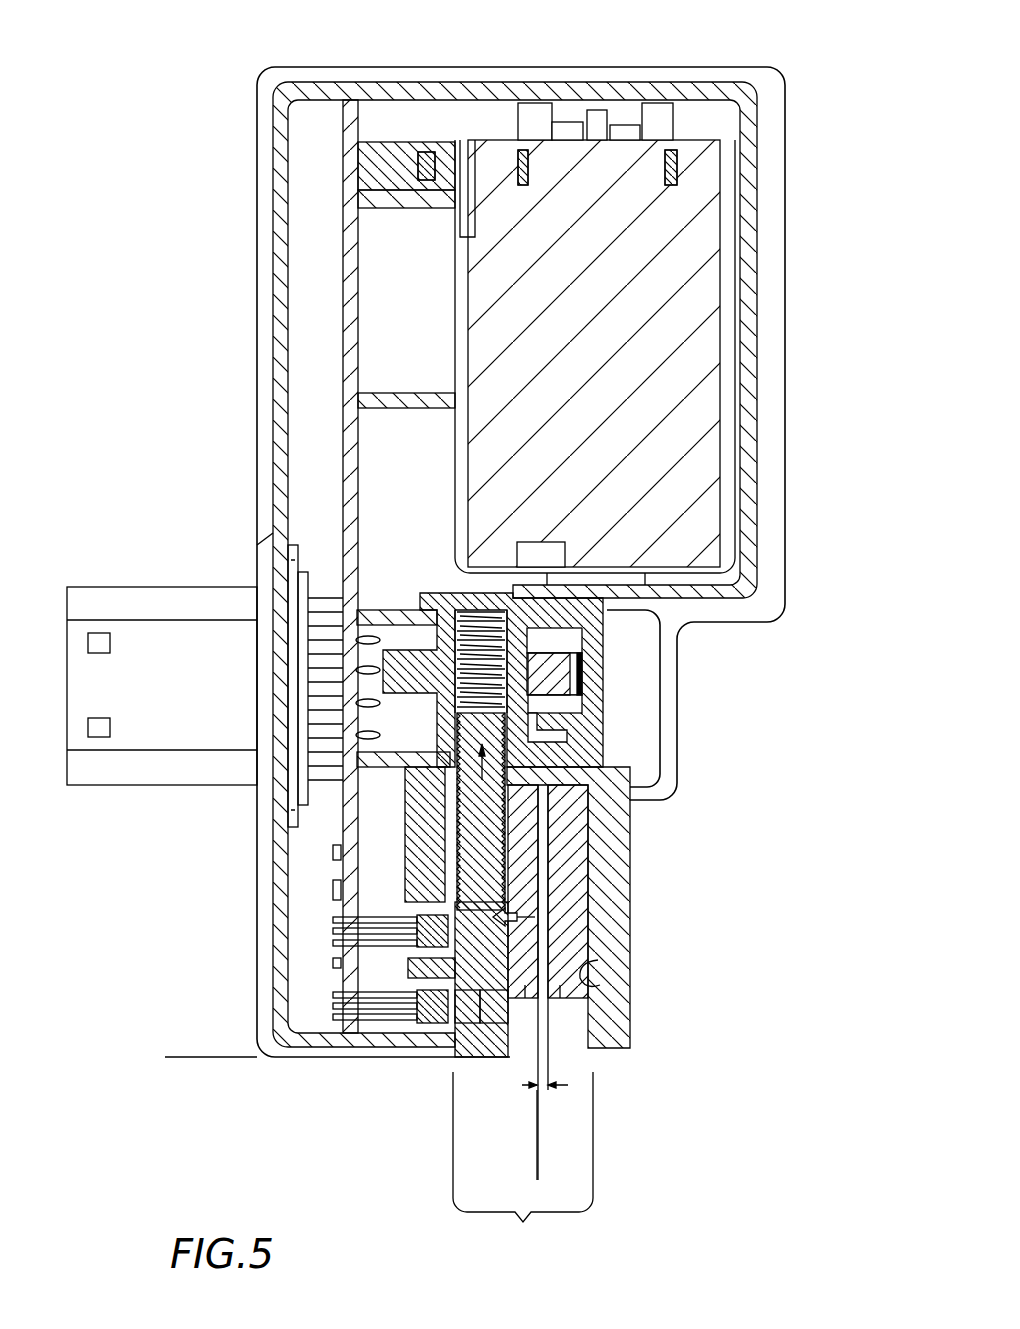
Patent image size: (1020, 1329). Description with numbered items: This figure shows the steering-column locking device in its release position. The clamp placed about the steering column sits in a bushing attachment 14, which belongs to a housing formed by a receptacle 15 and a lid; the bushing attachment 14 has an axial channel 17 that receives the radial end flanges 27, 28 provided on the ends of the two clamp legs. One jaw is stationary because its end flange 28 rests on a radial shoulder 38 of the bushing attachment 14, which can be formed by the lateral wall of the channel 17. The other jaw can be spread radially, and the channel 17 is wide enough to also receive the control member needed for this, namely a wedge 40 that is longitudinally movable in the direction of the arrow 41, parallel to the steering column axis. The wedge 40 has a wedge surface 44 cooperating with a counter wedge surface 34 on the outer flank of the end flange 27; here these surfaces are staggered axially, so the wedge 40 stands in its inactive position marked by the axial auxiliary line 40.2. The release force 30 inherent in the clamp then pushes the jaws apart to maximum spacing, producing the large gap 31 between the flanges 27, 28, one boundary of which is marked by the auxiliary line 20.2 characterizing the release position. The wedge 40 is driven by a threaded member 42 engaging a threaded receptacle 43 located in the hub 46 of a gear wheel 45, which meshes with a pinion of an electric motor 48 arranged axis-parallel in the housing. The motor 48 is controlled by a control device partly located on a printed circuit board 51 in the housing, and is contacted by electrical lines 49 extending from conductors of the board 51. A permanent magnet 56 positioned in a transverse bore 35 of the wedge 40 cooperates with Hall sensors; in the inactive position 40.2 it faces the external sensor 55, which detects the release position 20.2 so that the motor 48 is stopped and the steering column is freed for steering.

The bushing attachment 14 is at (630, 838).
The receptacle 15 is at (683, 737).
The axial channel 17 is at (523, 1222).
The auxiliary line 20.2 is at (537, 1172).
The end flange 27 is at (525, 985).
The end flange 28 is at (560, 985).
The release force 30 is at (537, 937).
The gap 31 is at (543, 1087).
The counter wedge surface 34 is at (508, 879).
The transverse bore 35 is at (508, 1022).
The radial shoulder 38 is at (590, 985).
The wedge 40 is at (468, 1038).
The axial auxiliary line 40.2 is at (185, 1057).
The arrow 41 is at (483, 783).
The threaded member 42 is at (440, 818).
The threaded receptacle 43 is at (505, 645).
The wedge surface 44 is at (440, 912).
The gear wheel 45 is at (575, 673).
The hub 46 is at (530, 715).
The electric motor 48 is at (465, 302).
The electrical lines 49 is at (517, 150).
The printed circuit board 51 is at (350, 113).
The sensor 55 is at (428, 1026).
The permanent magnet 56 is at (430, 948).